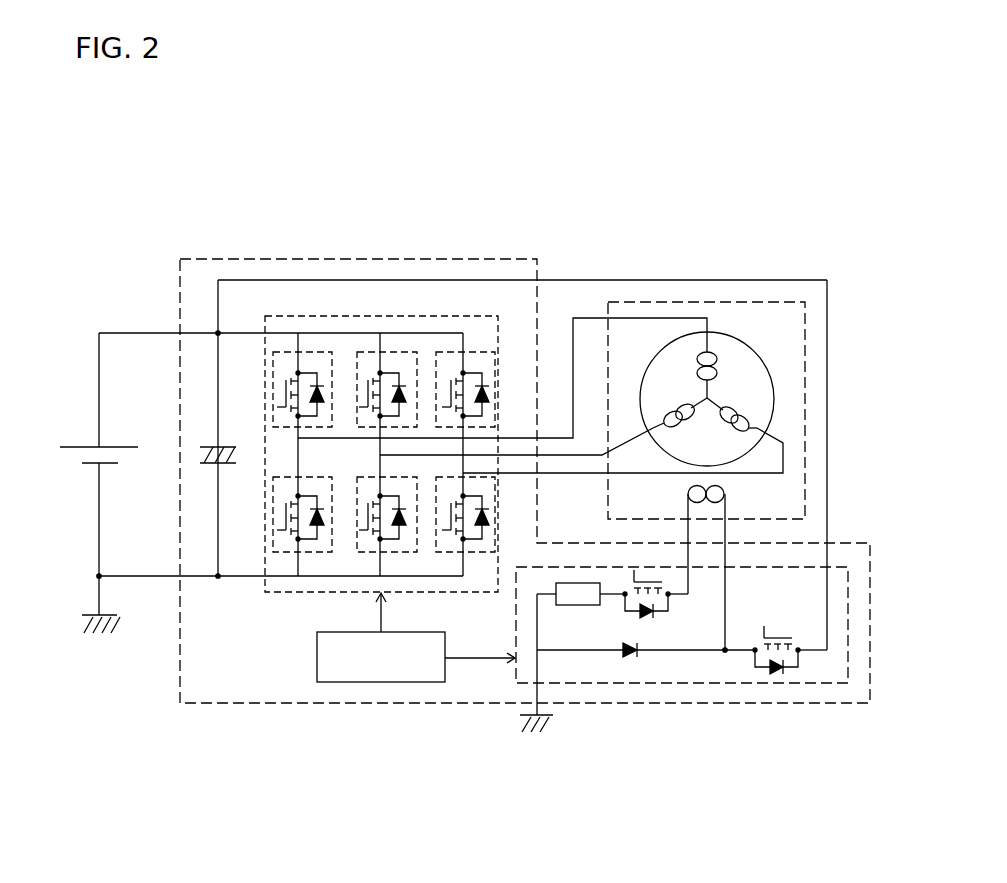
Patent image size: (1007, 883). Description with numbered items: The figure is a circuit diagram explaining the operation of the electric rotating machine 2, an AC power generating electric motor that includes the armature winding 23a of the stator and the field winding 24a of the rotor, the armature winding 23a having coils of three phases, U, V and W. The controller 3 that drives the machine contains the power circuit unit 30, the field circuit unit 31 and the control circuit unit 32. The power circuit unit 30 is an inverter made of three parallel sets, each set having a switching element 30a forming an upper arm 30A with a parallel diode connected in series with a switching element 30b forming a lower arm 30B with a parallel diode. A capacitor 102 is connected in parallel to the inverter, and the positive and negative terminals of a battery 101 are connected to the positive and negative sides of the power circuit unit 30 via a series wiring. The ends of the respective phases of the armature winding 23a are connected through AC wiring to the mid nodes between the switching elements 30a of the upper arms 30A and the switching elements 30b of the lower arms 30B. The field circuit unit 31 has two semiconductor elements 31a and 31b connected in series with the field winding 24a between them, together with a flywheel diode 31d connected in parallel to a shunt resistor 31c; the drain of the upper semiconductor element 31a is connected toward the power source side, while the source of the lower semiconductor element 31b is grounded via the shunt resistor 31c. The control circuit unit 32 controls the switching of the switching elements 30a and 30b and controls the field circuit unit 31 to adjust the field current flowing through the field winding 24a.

The battery 101 is at (73, 447).
The capacitor 102 is at (208, 447).
The electric rotating machine 2 is at (684, 302).
The armature winding 23a is at (758, 331).
The field winding 24a is at (730, 492).
The controller 3 is at (323, 259).
The power circuit unit 30 is at (441, 316).
The upper arm 30A is at (361, 322).
The lower arm 30B is at (314, 589).
The switching element 30a is at (279, 388).
The switching element 30b is at (279, 513).
The field circuit unit 31 is at (666, 665).
The semiconductor element 31a is at (766, 628).
The semiconductor element 31b is at (634, 570).
The shunt resistor 31c is at (566, 606).
The flywheel diode 31d is at (629, 664).
The control circuit unit 32 is at (357, 682).